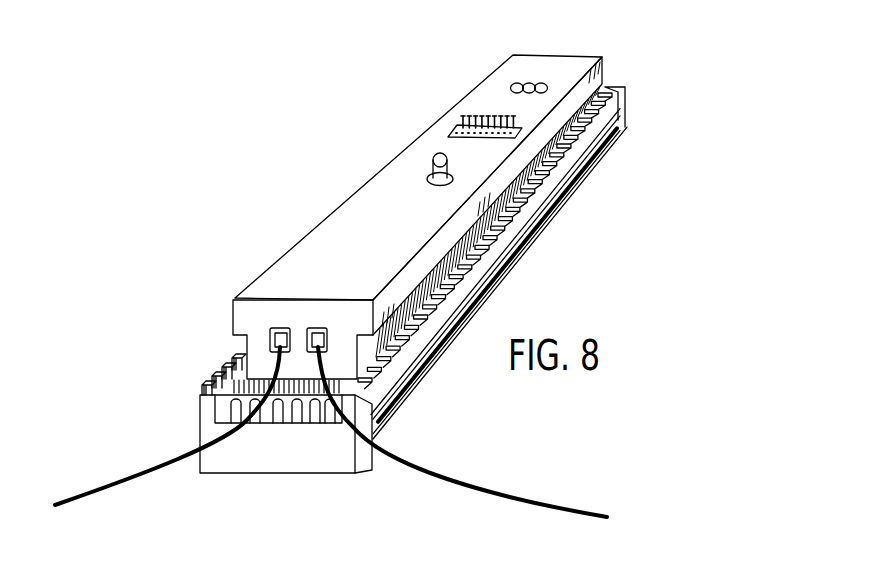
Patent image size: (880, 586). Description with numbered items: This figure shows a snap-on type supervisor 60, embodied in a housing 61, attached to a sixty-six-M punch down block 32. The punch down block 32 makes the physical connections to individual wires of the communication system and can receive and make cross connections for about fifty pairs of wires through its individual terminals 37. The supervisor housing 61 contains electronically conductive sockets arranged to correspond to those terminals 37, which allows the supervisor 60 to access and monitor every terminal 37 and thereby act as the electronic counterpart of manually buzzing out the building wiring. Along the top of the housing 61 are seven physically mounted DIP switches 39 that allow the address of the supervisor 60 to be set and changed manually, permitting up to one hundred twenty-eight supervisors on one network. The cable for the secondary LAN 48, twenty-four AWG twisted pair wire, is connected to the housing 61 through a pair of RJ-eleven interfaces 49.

The punch down block 32 is at (583, 181).
The terminals 37 is at (298, 425).
The DIP switches 39 is at (481, 101).
The secondary LAN 48 is at (156, 470).
The RJ-11 interfaces 49 is at (267, 335).
The supervisor 60 is at (321, 191).
The housing 61 is at (368, 184).